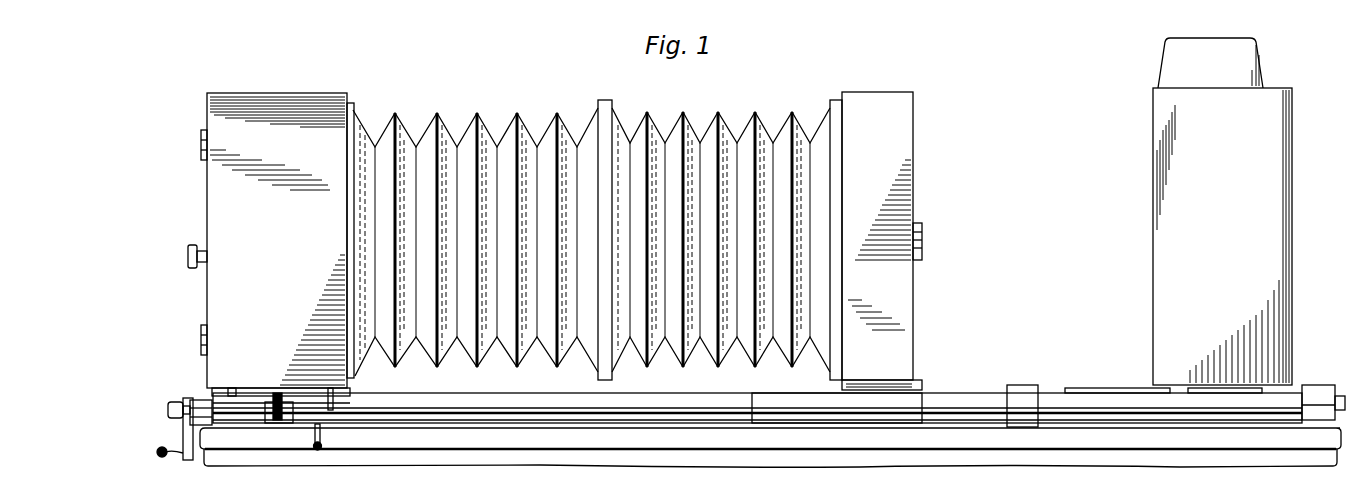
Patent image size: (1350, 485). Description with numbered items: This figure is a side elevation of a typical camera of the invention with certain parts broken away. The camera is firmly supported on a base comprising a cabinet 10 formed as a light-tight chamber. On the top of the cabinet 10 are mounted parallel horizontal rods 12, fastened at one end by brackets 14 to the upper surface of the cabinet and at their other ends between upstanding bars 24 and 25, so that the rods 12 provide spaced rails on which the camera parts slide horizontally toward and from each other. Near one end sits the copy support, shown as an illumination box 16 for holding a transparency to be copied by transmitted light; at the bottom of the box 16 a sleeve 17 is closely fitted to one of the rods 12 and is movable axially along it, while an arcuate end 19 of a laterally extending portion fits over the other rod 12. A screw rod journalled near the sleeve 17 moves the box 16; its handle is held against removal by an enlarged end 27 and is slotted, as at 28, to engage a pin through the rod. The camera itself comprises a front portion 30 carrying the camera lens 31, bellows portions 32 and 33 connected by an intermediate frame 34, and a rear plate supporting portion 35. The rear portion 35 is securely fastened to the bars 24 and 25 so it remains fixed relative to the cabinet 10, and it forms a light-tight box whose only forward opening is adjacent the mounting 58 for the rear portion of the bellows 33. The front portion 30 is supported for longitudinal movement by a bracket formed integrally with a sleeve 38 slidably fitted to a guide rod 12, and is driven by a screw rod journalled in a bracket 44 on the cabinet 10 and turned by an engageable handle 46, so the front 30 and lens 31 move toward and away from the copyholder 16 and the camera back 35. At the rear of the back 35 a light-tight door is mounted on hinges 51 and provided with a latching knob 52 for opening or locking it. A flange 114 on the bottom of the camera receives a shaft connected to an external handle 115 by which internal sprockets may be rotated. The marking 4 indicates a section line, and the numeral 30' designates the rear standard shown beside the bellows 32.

The section line 4- 4 is at (230, 47).
The cabinet 10 is at (588, 450).
The horizontal rods 12 is at (703, 394).
The brackets 14 is at (1325, 386).
The illumination box 16 is at (1222, 211).
The sleeve 17 is at (1113, 389).
The arcuate end 19 is at (1270, 386).
The bar 24 is at (230, 426).
The bar 25 is at (352, 394).
The enlarged end 27 is at (176, 402).
The slot 28 is at (206, 396).
The front portion 30 is at (208, 425).
The rear standard 30' is at (891, 241).
The camera lens 31 is at (923, 240).
The bellows portion 32 is at (738, 102).
The bellows portion 33 is at (490, 106).
The intermediate frame 34 is at (606, 100).
The rear plate supporting portion 35 is at (335, 94).
The sleeve 38 is at (912, 394).
The bracket 44 is at (1027, 385).
The engageable handle 46 is at (192, 458).
The hinges 51 is at (201, 145).
The latching knob 52 is at (192, 246).
The mounting 58 is at (353, 106).
The flange 114 is at (283, 424).
The external handle 115 is at (324, 426).